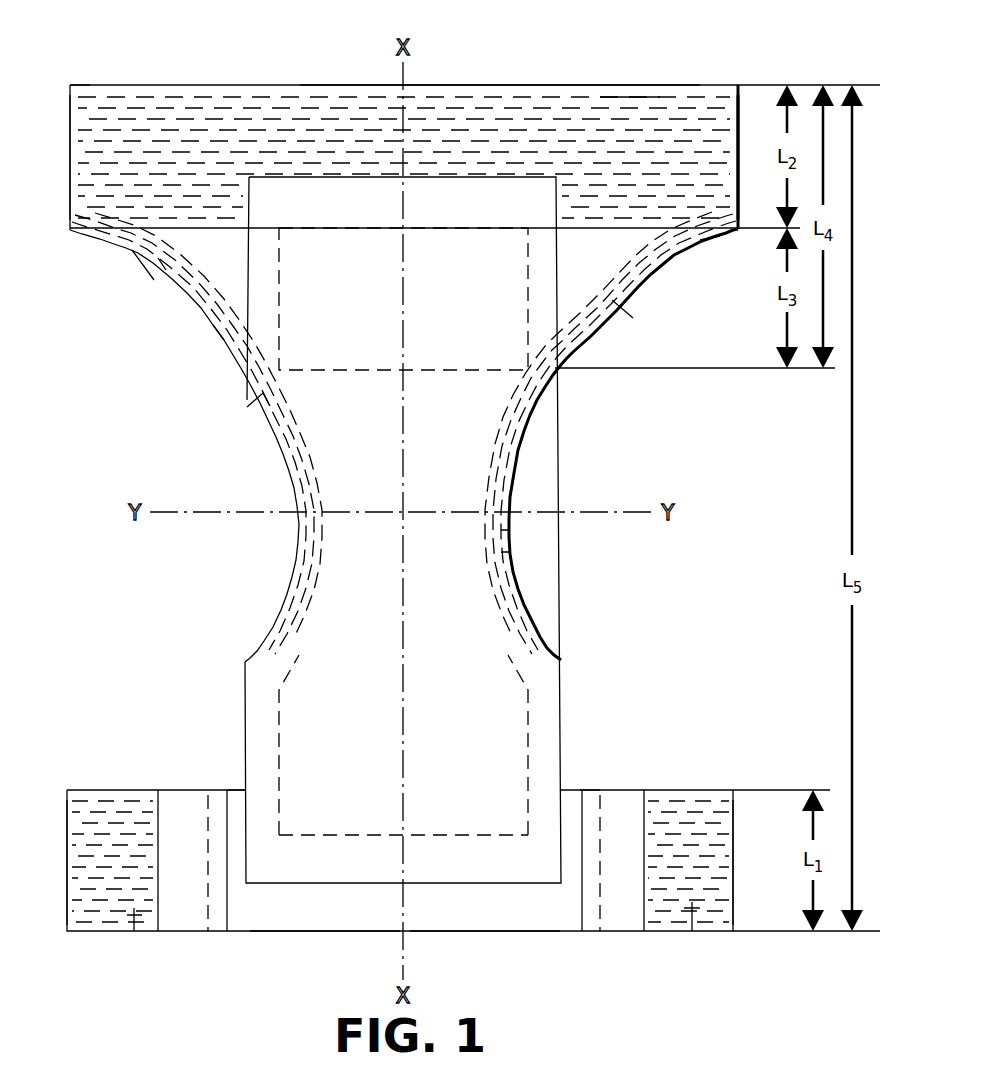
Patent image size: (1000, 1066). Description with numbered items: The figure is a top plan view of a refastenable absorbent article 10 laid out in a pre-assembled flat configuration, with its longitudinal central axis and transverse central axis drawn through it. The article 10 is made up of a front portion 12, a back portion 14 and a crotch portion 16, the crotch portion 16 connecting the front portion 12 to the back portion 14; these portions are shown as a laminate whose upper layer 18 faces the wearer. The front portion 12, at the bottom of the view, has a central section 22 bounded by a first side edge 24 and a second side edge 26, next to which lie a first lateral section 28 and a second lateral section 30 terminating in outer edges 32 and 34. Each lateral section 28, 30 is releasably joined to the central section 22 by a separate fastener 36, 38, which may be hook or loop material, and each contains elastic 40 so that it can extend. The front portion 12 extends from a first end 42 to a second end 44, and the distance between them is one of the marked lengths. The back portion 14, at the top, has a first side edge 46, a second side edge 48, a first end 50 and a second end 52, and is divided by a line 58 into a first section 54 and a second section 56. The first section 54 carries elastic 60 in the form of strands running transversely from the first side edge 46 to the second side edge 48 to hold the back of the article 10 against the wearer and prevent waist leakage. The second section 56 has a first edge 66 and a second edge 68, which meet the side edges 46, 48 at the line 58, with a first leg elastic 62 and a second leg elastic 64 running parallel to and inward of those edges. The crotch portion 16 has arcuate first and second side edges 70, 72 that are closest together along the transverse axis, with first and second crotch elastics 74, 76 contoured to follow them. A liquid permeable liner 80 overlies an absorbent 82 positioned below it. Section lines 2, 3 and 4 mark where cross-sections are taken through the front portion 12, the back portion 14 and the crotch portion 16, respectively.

The refastenable absorbent article 10 is at (98, 48).
The front portion 12 is at (655, 726).
The back portion 14 is at (692, 303).
The crotch portion 16 is at (620, 553).
The upper layer 18 is at (525, 933).
The central section 22 is at (453, 920).
The first side edge 24 is at (207, 932).
The second side edge 26 is at (611, 932).
The first lateral section 28 is at (142, 790).
The second lateral section 30 is at (682, 790).
The outer edge 32 is at (66, 868).
The outer edge 34 is at (735, 870).
The fastener 36 is at (192, 800).
The fastener 38 is at (618, 800).
The elastic 40 is at (132, 918).
The first end 42 is at (305, 933).
The second end 44 is at (242, 790).
The first side edge 46 is at (68, 133).
The second side edge 48 is at (738, 144).
The first end 50 is at (509, 85).
The second end 52 is at (427, 377).
The first section 54 is at (713, 150).
The second section 56 is at (668, 229).
The line 58 is at (140, 255).
The elastic 60 is at (654, 127).
The first leg elastic 62 is at (150, 272).
The second leg elastic 64 is at (618, 302).
The first edge 66 is at (224, 341).
The second edge 68 is at (578, 343).
The first side edge 70 is at (288, 606).
The second side edge 72 is at (522, 606).
The first crotch elastic 74 is at (244, 410).
The second crotch elastic 76 is at (505, 550).
The liquid permeable liner 80 is at (461, 704).
The absorbent 82 is at (540, 712).
The section line 2- 2 is at (100, 818).
The section line 3- 3 is at (228, 330).
The section line 4- 4 is at (330, 512).